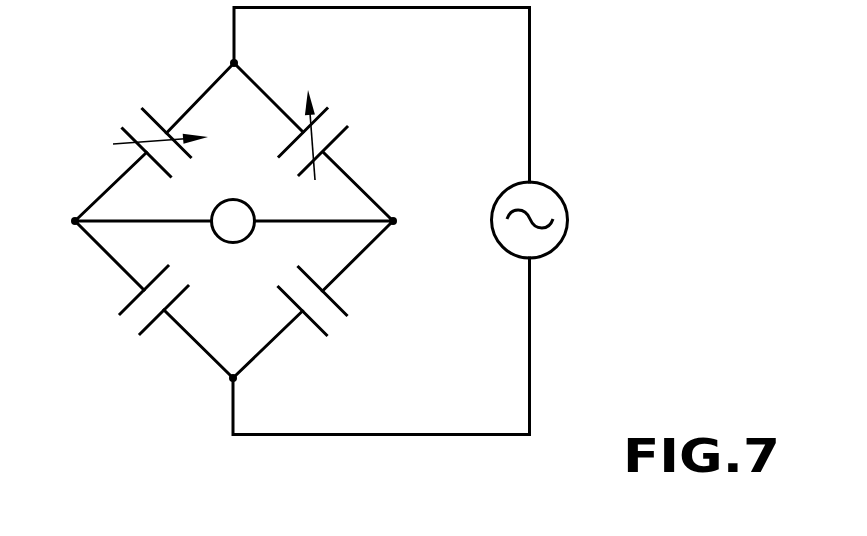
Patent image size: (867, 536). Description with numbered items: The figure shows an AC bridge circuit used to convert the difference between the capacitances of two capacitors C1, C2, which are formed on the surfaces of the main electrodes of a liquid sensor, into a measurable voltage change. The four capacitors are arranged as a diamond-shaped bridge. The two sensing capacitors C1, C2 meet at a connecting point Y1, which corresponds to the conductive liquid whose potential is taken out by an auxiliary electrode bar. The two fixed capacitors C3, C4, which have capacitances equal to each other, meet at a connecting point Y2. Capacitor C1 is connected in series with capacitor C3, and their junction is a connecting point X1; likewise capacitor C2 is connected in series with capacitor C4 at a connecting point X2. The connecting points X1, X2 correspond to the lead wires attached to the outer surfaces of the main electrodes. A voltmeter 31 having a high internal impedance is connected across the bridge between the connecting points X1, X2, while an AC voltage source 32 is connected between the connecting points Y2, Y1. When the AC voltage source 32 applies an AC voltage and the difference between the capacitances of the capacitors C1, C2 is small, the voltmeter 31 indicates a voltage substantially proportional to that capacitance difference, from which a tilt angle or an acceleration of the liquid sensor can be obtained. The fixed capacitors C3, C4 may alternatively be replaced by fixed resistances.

The voltmeter 31 is at (230, 199).
The AC voltage source 32 is at (562, 199).
The capacitor C1 is at (157, 123).
The capacitor C2 is at (331, 126).
The fixed capacitor C3 is at (140, 315).
The fixed capacitor C4 is at (325, 318).
The connecting point X1 is at (53, 224).
The connecting point X2 is at (415, 224).
The connecting point Y1 is at (252, 48).
The connecting point Y2 is at (213, 394).